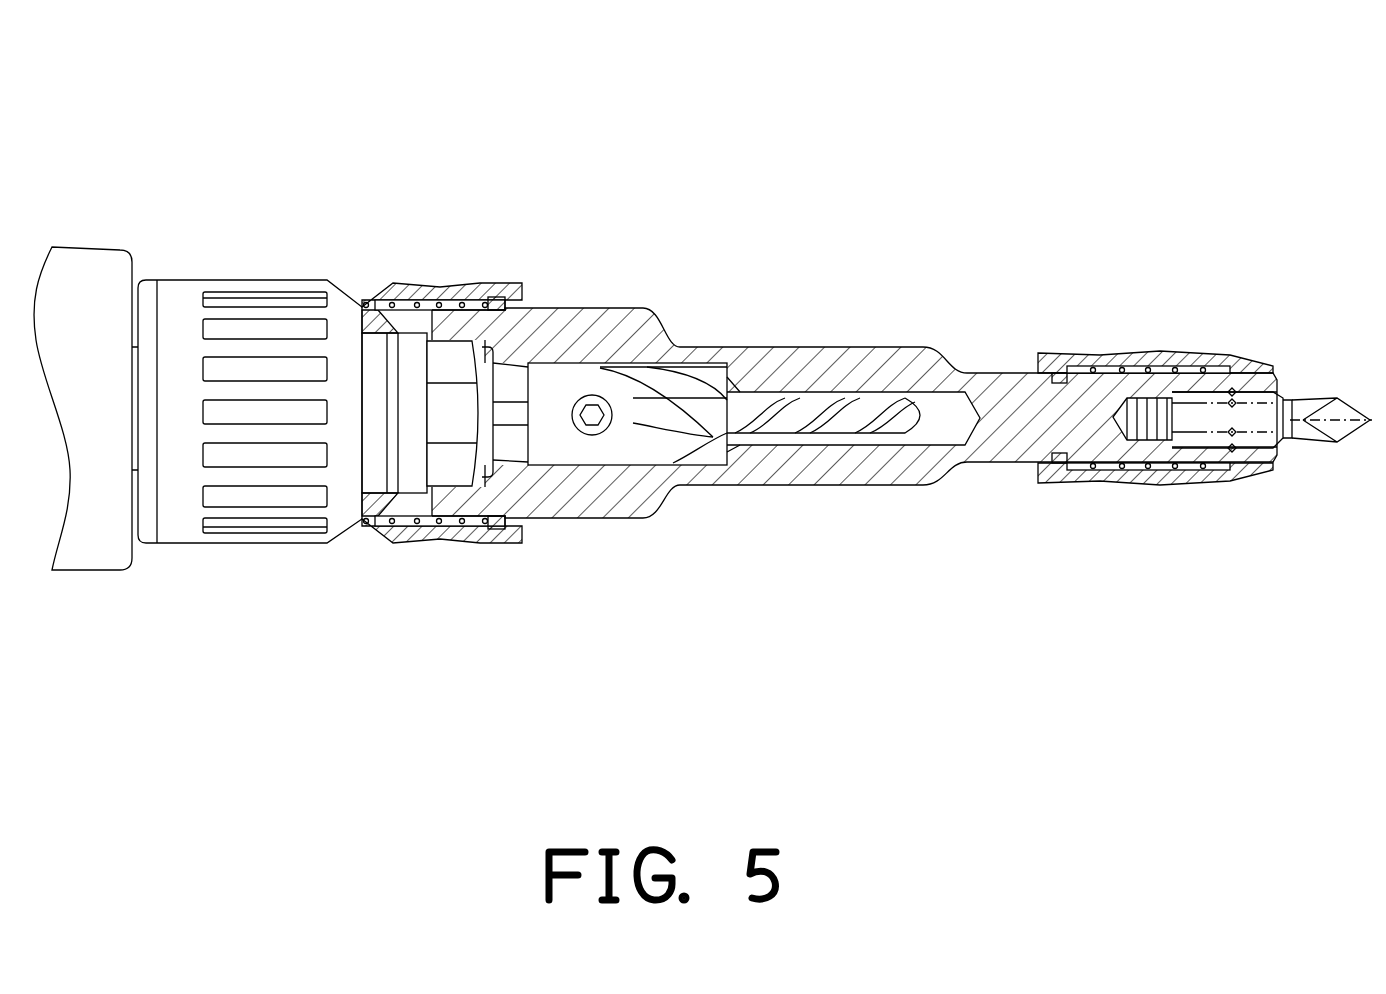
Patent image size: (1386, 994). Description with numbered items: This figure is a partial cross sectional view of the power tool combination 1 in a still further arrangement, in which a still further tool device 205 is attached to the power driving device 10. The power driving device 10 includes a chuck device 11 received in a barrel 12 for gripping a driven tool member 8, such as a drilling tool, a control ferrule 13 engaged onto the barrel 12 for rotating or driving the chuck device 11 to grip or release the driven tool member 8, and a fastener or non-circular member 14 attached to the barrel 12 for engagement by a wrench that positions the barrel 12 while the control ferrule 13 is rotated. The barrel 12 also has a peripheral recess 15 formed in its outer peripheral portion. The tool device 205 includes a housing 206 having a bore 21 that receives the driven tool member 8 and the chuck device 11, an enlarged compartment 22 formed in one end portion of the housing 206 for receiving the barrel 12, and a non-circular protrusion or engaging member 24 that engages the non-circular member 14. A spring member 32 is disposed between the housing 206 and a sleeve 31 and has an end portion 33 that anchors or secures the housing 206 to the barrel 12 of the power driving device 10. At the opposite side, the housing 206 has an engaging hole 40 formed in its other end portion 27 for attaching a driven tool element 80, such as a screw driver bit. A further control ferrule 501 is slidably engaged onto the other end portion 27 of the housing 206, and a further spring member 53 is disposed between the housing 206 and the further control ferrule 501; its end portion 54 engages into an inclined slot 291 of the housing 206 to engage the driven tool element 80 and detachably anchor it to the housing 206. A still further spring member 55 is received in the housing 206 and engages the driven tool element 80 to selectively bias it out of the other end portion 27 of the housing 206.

The power tool combination 1 is at (725, 158).
The still further tool device 205 is at (713, 270).
The power driving device 10 is at (65, 227).
The control ferrule 13 is at (185, 528).
The barrel 12 is at (378, 478).
The end portion 33 is at (367, 303).
The sleeve 31 is at (505, 283).
The spring member 32 is at (438, 303).
The enlarged compartment 22 is at (462, 303).
The non-circular member 14 is at (453, 467).
The peripheral recess 15 is at (435, 487).
The engaging member 24 is at (542, 307).
The chuck device 11 is at (502, 443).
The driven tool member 8 is at (805, 405).
The bore 21 is at (850, 433).
The housing 206 is at (715, 478).
The other end portion 27 is at (987, 455).
The further spring member 53 is at (1107, 473).
The further control ferrule 501 is at (1100, 357).
The inclined slot 291 is at (1225, 368).
The still further spring member 55 is at (1147, 440).
The end portion 54 is at (1230, 390).
The engaging hole 40 is at (1200, 447).
The driven tool element 80 is at (1293, 430).